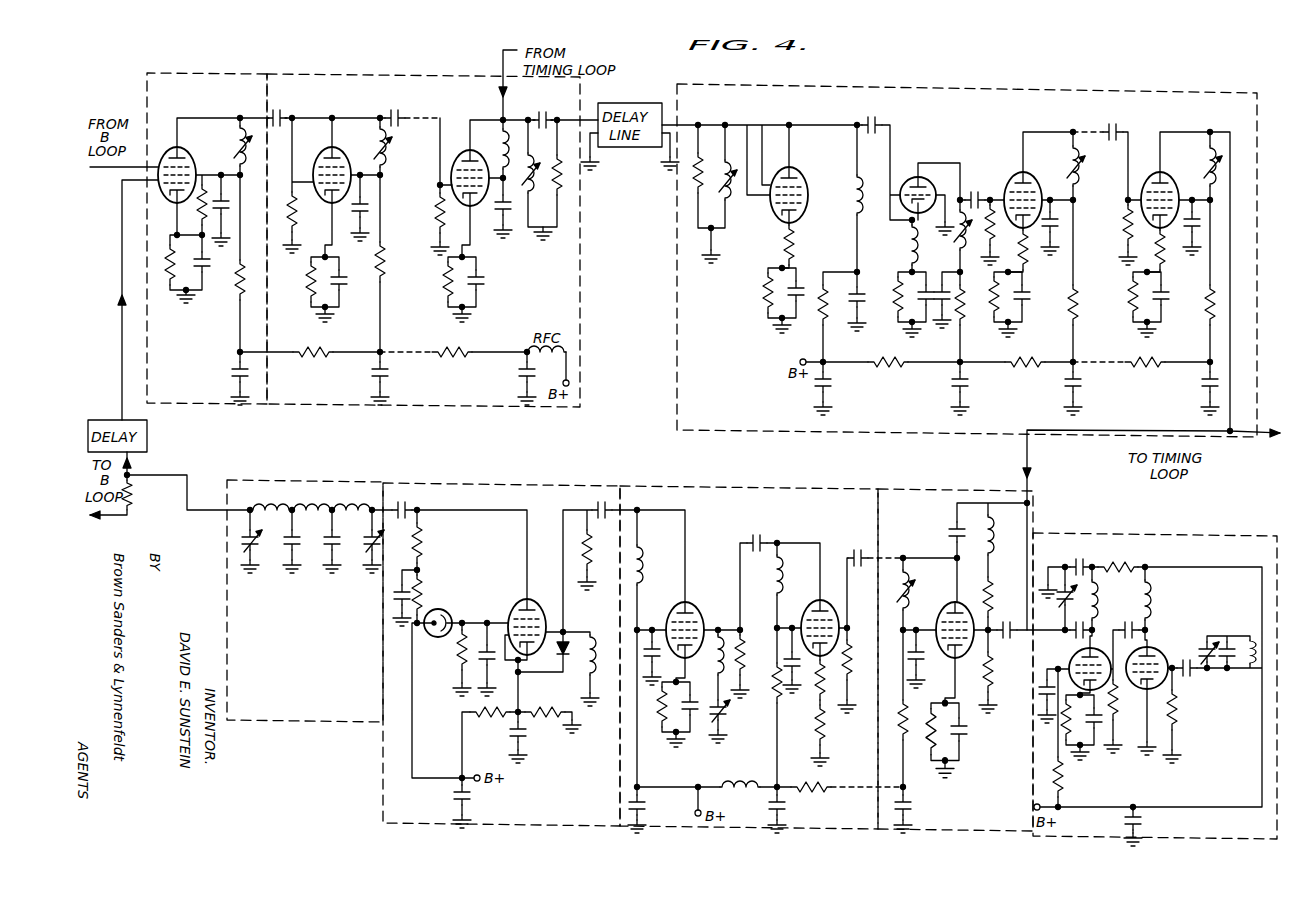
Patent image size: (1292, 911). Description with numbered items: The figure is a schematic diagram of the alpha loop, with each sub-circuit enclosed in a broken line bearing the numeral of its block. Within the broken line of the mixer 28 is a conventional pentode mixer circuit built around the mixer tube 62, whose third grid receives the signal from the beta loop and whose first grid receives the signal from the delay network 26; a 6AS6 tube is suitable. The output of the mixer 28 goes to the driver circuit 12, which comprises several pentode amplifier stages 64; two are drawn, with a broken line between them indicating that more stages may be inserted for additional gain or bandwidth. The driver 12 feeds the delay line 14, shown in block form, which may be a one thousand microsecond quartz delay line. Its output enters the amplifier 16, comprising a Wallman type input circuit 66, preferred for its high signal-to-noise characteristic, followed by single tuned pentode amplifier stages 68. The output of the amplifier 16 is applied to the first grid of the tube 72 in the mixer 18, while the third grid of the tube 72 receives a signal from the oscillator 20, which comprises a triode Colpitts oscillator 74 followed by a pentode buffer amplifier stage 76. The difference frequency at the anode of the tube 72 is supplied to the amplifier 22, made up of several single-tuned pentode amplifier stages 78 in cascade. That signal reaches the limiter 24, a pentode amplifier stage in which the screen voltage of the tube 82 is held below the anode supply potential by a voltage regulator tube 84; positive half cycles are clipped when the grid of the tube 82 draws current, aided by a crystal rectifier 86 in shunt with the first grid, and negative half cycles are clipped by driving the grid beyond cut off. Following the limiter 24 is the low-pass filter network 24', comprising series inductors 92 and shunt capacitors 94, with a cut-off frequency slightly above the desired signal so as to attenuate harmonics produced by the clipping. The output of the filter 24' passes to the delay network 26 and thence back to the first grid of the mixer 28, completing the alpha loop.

The mixer 28 is at (195, 73).
The driver circuit 12 is at (375, 75).
The amplifier 16 is at (1000, 88).
The delay line 14 is at (630, 148).
The delay network 26 is at (147, 436).
The limiter 24 is at (501, 640).
The low-pass filter network 24' is at (305, 621).
The amplifier 22 is at (722, 488).
The mixer 18 is at (906, 491).
The oscillator 20 is at (1148, 534).
The mixer tube 62 is at (190, 153).
The pentode amplifier stages 64 is at (342, 148).
The Wallman type input circuit 66 is at (905, 170).
The single tuned pentode amplifier stages 68 is at (1055, 165).
The tube 72 is at (950, 605).
The triode Colpitts oscillator 74 is at (1165, 622).
The pentode buffer amplifier stage 76 is at (1072, 656).
The single-tuned pentode amplifier stages 78 is at (678, 597).
The tube 82 is at (530, 605).
The voltage regulator tube 84 is at (441, 609).
The crystal rectifier 86 is at (566, 666).
The series inductors 92 is at (350, 500).
The shunt capacitors 94 is at (372, 552).